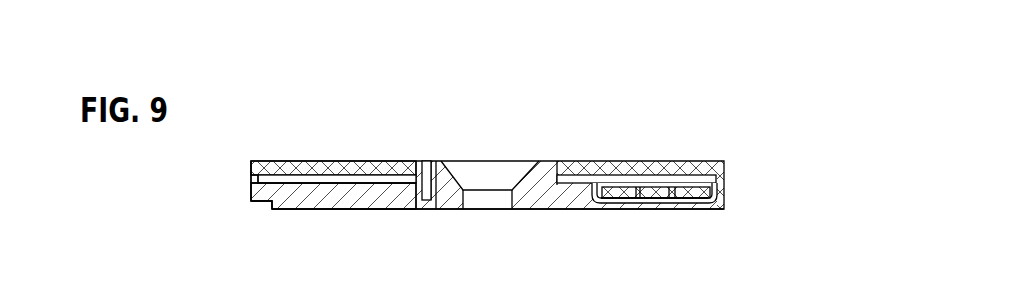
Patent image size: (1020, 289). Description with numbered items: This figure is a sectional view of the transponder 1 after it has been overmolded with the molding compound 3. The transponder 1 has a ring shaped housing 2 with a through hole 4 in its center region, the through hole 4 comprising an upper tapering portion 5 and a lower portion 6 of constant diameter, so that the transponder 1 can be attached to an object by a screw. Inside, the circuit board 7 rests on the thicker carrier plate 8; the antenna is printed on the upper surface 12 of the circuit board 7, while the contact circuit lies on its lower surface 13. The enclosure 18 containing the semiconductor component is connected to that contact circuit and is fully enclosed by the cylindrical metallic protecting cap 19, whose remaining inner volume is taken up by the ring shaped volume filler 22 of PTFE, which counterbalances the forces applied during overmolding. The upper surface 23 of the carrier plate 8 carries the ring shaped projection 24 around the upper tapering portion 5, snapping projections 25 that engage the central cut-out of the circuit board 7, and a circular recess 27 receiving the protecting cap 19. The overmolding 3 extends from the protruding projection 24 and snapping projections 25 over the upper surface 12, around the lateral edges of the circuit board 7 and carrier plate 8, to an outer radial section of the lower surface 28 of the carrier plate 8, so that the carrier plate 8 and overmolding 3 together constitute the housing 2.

The transponder 1 is at (770, 163).
The housing 2 is at (145, 192).
The molding compound 3 is at (345, 167).
The through hole 4 is at (510, 140).
The upper tapering portion 5 is at (455, 161).
The lower portion 6 is at (471, 195).
The circuit board 7 is at (245, 173).
The carrier plate 8 is at (248, 203).
The upper surface 12 is at (318, 175).
The lower surface 13 is at (282, 182).
The enclosure 18 is at (657, 192).
The protecting cap 19 is at (690, 200).
The volume filler 22 is at (615, 195).
The upper surface 23 is at (373, 186).
The ring shaped projection 24 is at (555, 161).
The snapping projections 25 is at (414, 163).
The circular recess 27 is at (590, 186).
The lower surface 28 is at (297, 210).